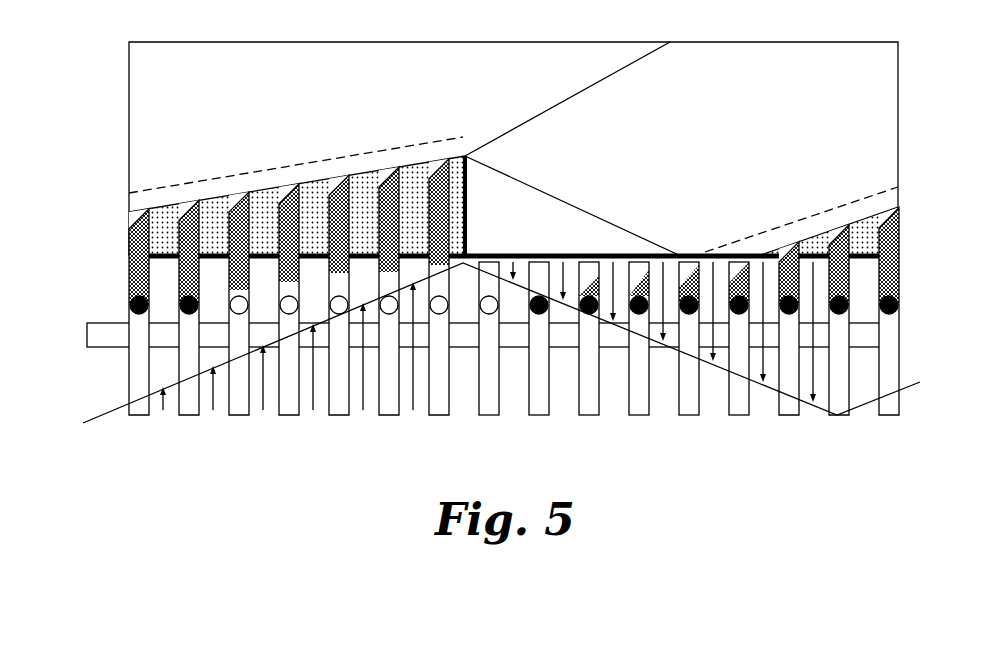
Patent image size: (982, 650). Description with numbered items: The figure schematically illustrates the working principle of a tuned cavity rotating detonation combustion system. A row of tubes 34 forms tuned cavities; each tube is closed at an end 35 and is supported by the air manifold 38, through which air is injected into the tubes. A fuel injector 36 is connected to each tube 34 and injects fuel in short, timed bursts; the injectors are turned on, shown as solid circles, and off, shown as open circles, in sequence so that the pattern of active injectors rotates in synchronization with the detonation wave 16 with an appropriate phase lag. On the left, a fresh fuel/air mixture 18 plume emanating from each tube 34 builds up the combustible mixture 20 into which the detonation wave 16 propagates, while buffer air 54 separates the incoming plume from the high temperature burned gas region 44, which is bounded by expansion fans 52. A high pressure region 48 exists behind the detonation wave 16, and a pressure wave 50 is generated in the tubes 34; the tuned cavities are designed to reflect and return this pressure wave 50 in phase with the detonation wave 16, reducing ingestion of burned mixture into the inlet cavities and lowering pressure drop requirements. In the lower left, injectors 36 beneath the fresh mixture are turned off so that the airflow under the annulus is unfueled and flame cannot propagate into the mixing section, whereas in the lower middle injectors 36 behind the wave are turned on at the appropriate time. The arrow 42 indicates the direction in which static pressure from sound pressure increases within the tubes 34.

The detonation wave 16 is at (468, 219).
The fuel/air mixture plume 18 is at (236, 210).
The combustible mixture 20 is at (366, 187).
The tubes 34 is at (435, 408).
The closed ends 35 is at (240, 410).
The fuel injectors 36 is at (123, 304).
The air manifold 38 is at (86, 340).
The arrow 42 is at (762, 364).
The high temperature burned gas region 44 is at (272, 110).
The high pressure region 48 is at (620, 237).
The pressure wave 50 is at (110, 413).
The expansion fans 52 is at (633, 63).
The buffer air 54 is at (260, 177).